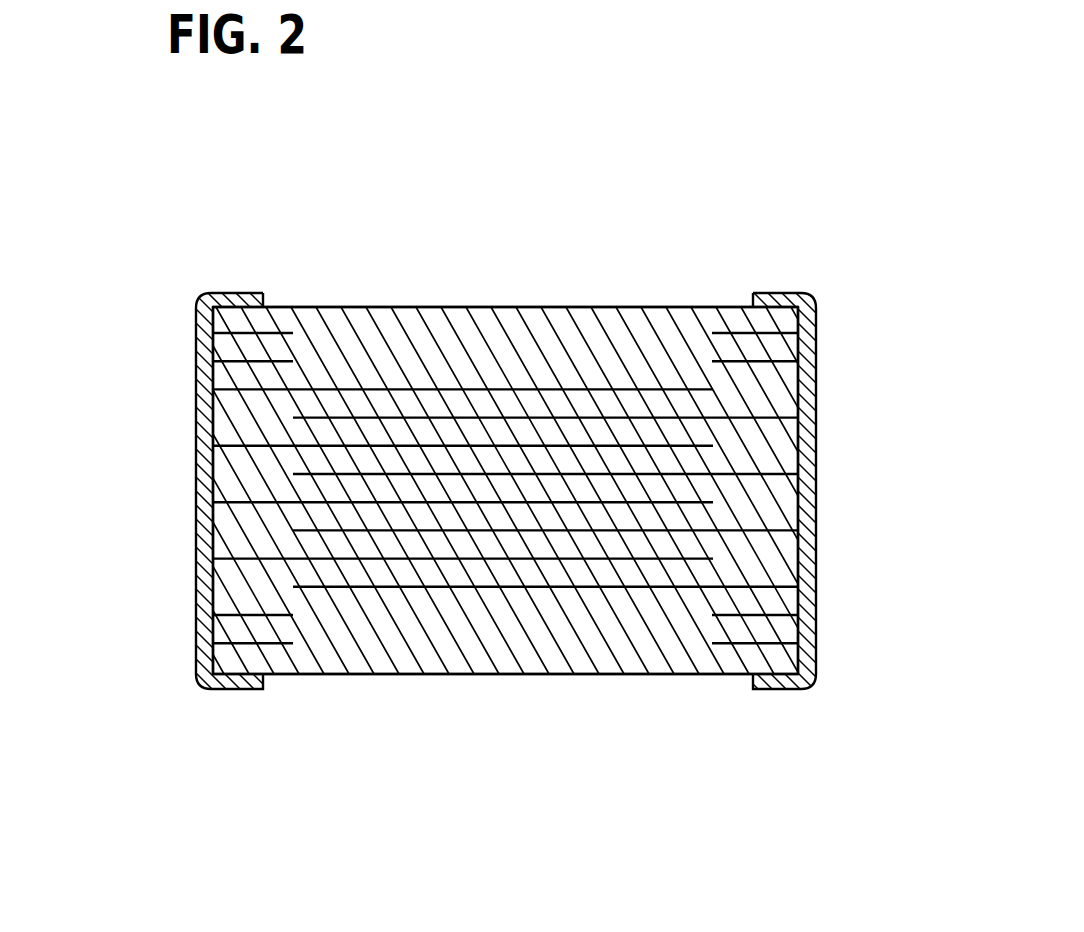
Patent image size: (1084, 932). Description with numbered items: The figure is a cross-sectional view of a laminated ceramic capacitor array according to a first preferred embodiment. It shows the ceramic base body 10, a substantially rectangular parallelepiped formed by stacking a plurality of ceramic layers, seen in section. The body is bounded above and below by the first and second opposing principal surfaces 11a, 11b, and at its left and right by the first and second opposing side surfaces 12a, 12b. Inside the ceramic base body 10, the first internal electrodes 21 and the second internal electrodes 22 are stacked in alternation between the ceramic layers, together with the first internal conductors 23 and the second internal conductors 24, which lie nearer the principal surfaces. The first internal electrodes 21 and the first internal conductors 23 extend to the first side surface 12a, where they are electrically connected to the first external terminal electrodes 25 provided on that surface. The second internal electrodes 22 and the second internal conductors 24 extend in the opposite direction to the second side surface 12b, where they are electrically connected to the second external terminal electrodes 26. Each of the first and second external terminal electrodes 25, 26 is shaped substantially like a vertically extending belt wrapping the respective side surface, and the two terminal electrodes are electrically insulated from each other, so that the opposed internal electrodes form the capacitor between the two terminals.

The ceramic base body 10 is at (667, 286).
The first principal surface 11a is at (450, 307).
The second principal surface 11b is at (453, 675).
The first side surface 12a is at (195, 473).
The second side surface 12b is at (817, 438).
The first internal electrode 21 is at (355, 389).
The second internal electrode 22 is at (483, 416).
The first internal conductor 23 is at (241, 303).
The second internal conductor 24 is at (722, 333).
The first external terminal electrode 25 is at (195, 418).
The second external terminal electrode 26 is at (818, 507).